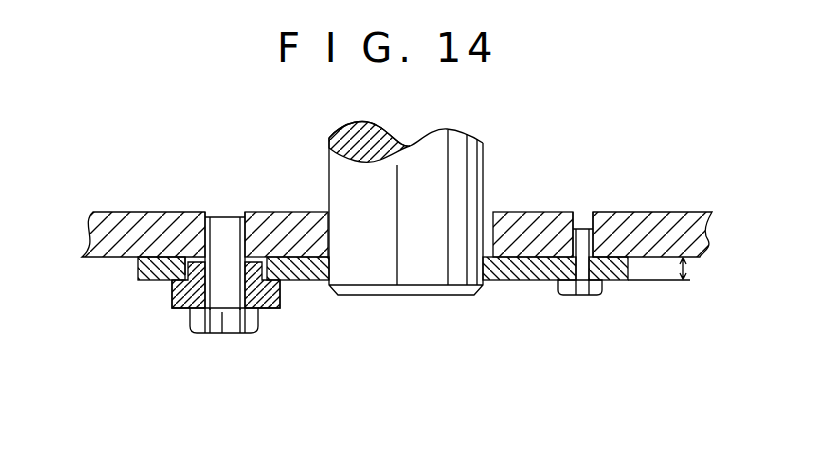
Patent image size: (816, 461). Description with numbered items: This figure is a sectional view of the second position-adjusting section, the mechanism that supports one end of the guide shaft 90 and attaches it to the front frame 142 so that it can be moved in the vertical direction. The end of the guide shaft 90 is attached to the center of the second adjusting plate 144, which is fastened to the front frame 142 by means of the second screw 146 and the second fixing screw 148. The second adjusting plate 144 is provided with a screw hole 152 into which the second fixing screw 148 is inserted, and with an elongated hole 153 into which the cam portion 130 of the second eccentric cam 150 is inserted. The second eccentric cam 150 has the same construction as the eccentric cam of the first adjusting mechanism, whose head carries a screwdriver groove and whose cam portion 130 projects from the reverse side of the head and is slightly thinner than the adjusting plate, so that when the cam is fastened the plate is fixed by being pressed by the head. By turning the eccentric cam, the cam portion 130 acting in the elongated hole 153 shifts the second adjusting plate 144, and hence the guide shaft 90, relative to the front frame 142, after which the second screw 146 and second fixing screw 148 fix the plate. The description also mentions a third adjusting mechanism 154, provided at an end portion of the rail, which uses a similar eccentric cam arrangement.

The guide shaft 90 is at (418, 275).
The cam portion 130 is at (252, 222).
The front frame 142 is at (548, 224).
The second adjusting plate 144 is at (513, 272).
The second screw 146 is at (210, 326).
The second fixing screw 148 is at (597, 294).
The second eccentric cam 150 is at (180, 312).
The screw hole 152 is at (576, 292).
The elongated hole 153 is at (281, 310).
The third adjusting mechanism 154 is at (172, 292).